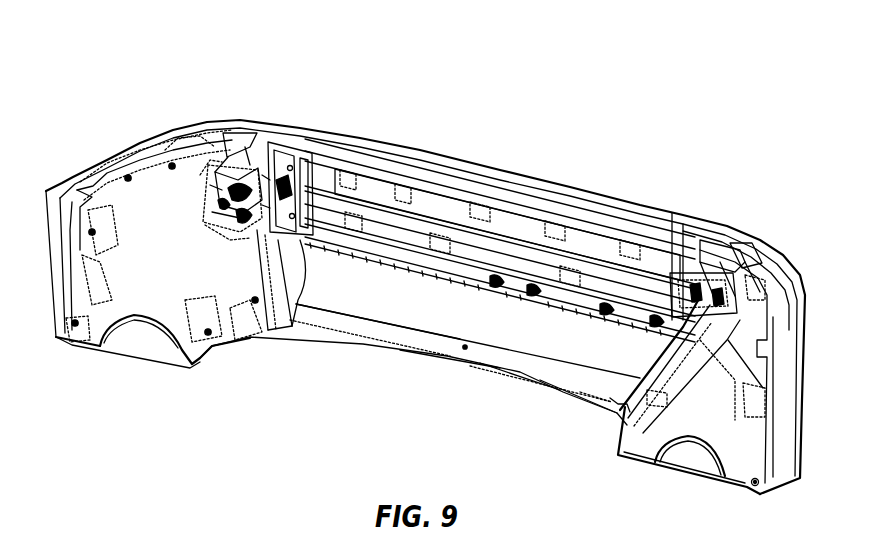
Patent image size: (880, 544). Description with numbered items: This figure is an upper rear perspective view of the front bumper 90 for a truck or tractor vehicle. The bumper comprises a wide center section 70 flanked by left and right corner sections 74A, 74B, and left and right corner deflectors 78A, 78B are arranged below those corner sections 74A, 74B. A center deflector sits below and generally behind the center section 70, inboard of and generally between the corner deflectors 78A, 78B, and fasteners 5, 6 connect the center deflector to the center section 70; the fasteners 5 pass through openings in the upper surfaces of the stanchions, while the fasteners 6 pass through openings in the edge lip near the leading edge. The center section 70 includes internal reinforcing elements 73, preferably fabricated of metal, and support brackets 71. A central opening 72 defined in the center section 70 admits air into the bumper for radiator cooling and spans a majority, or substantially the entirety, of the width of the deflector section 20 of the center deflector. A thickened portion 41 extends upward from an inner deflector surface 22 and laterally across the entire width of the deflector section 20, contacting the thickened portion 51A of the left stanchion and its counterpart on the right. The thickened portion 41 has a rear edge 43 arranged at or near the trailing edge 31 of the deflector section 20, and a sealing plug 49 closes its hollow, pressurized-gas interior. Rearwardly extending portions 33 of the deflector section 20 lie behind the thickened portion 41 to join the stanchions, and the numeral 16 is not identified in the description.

The front bumper 90 is at (82, 42).
The left corner section 74A is at (133, 229).
The right corner section 74B is at (747, 362).
The left corner deflector 78A is at (159, 351).
The right corner deflector 78B is at (691, 411).
The fasteners 5 is at (231, 159).
The support brackets 71 is at (287, 152).
The internal reinforcing elements 73 is at (500, 165).
The center section 70 is at (425, 289).
The fasteners 6 is at (500, 227).
The clip 16 is at (592, 225).
The central opening 72 is at (500, 225).
The thickened portion of stanchion 51A is at (282, 307).
The thickened portion 41 is at (378, 340).
The deflector section 20 is at (420, 364).
The rear edge 43 is at (450, 375).
The sealing plug 49 is at (480, 380).
The inner deflector surface 22 is at (520, 377).
The trailing edge 31 is at (578, 408).
The rearwardly extending portions 33 is at (593, 426).